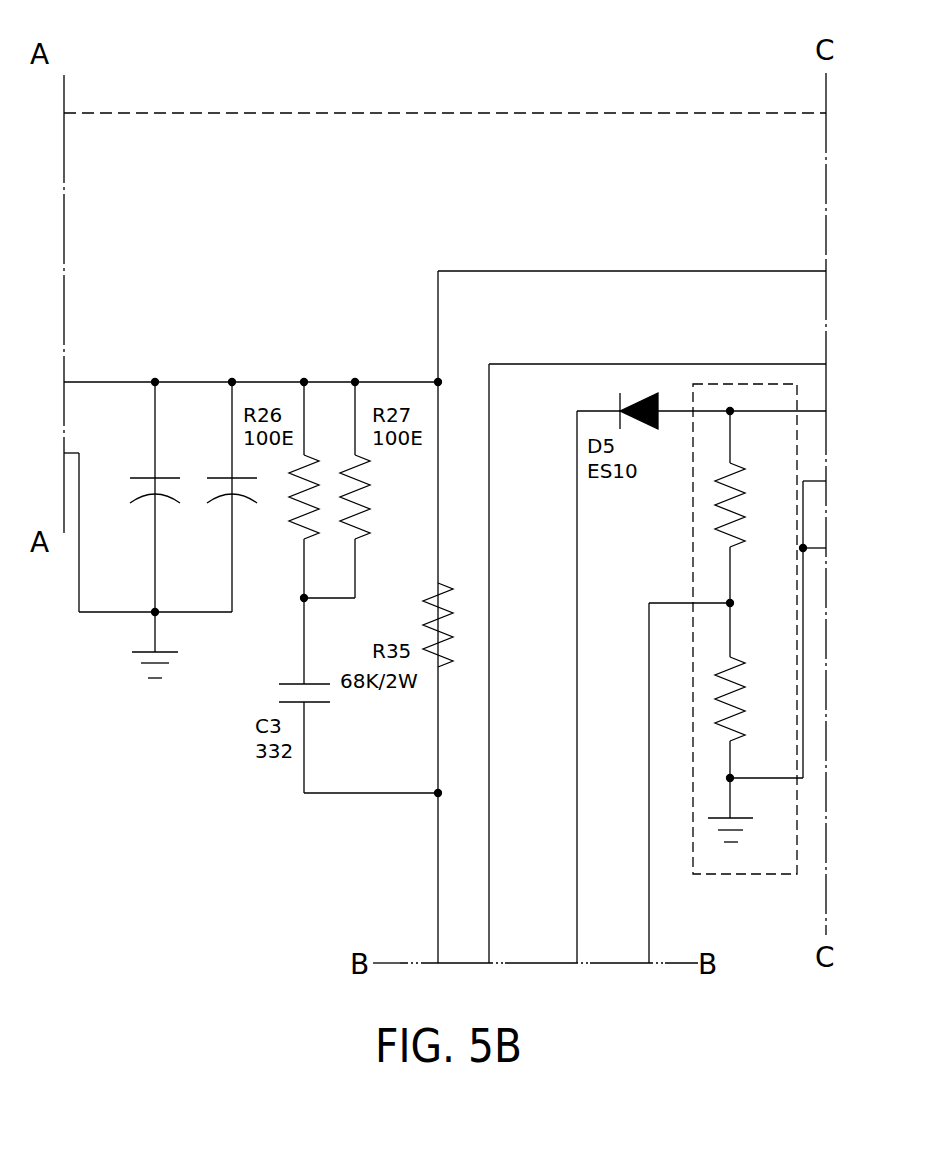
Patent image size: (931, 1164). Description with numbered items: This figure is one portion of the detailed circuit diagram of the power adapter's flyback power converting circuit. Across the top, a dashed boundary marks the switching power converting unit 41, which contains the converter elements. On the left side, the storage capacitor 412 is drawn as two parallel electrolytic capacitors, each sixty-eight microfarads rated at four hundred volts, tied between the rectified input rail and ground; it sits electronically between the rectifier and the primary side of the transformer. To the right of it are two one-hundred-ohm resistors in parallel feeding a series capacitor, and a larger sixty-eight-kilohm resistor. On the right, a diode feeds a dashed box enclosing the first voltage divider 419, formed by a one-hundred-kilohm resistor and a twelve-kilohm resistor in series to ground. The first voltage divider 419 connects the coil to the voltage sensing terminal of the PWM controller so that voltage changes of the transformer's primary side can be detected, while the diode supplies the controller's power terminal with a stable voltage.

The switching power converting unit 41 is at (318, 113).
The storage capacitor 412 is at (152, 477).
The first voltage divider 419 is at (693, 822).